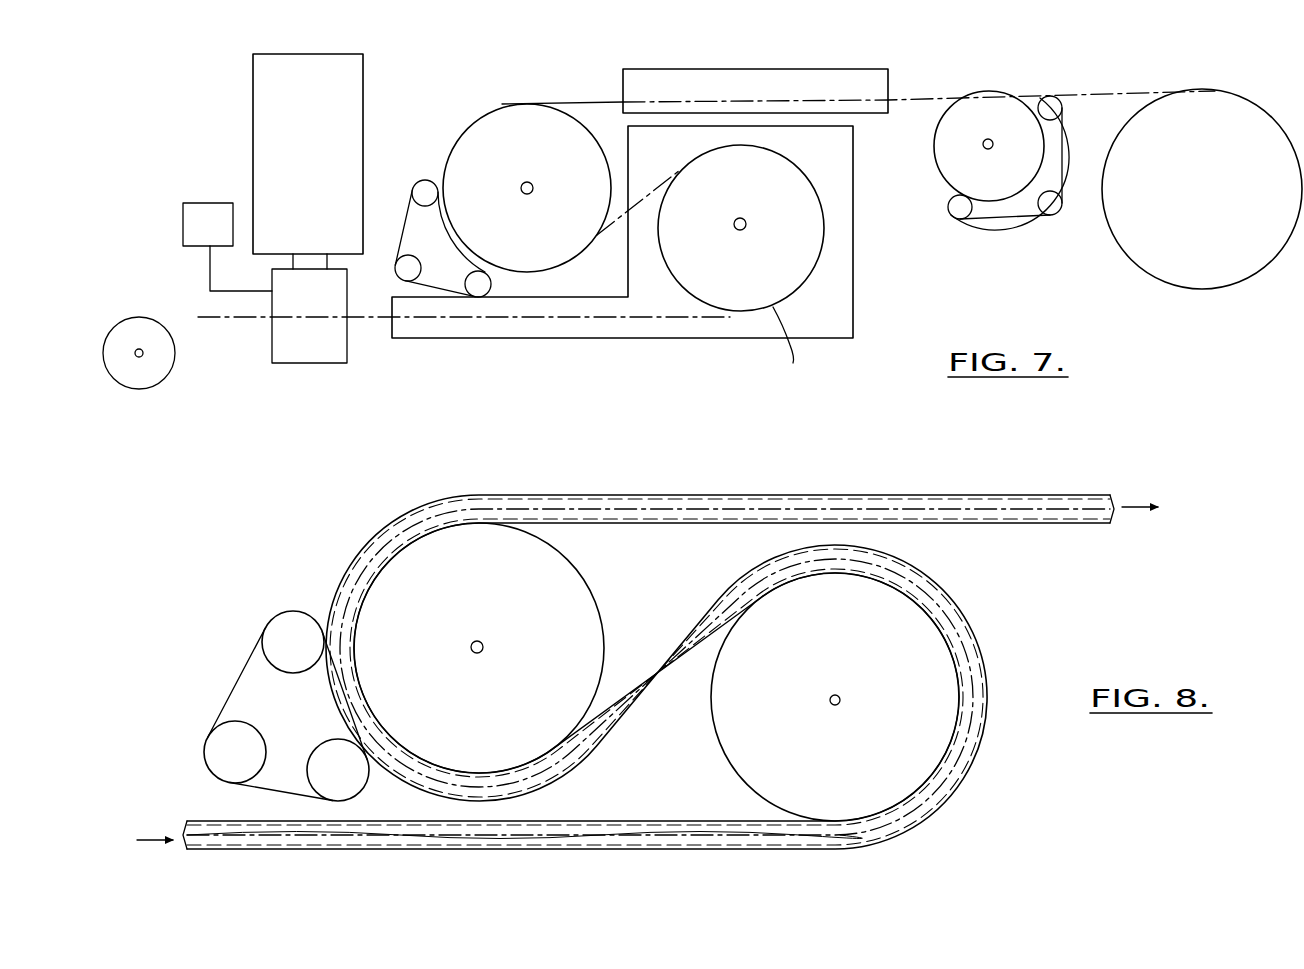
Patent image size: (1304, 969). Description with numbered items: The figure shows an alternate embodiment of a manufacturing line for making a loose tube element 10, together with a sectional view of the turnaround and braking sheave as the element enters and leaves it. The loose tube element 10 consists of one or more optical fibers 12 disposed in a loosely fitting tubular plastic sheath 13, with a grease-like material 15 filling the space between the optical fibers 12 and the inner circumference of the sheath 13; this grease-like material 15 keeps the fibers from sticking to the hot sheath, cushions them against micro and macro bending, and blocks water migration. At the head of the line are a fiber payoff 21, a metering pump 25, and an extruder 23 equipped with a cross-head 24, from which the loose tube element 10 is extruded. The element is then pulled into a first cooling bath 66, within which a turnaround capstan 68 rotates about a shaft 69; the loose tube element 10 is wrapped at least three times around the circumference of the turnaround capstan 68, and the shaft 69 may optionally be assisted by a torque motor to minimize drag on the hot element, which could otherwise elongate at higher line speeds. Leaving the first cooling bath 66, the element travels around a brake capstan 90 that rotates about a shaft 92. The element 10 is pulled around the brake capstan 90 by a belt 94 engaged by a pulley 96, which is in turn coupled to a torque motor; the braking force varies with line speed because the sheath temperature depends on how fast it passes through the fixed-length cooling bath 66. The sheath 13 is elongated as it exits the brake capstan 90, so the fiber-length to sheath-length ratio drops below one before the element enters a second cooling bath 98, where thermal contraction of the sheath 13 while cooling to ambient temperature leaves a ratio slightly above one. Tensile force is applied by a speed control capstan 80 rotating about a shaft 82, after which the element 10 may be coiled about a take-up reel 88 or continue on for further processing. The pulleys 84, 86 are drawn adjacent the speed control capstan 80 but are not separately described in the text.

In FIG. 8, the loose tube element 10 is at (615, 822).
In FIG. 7, the optical fibers 12 is at (162, 297).
In FIG. 8, the optical fibers 12 is at (707, 623).
In FIG. 8, the tubular plastic sheath 13 is at (823, 492).
In FIG. 8, the grease-like material 15 is at (907, 503).
In FIG. 7, the fiber payoff 21 is at (135, 318).
In FIG. 7, the extruder 23 is at (364, 112).
In FIG. 7, the cross-head 24 is at (347, 297).
In FIG. 7, the metering pump 25 is at (213, 203).
In FIG. 7, the first cooling bath 66 is at (550, 338).
In FIG. 7, the turnaround capstan 68 is at (775, 345).
In FIG. 8, the turnaround capstan 68 is at (883, 807).
In FIG. 7, the shaft 69 is at (745, 221).
In FIG. 8, the shaft 69 is at (845, 680).
In FIG. 7, the speed control capstan 80 is at (983, 92).
In FIG. 7, the shaft 82 is at (983, 146).
In FIG. 7, the pulley 84 is at (995, 220).
In FIG. 7, the pulley 86 is at (1053, 217).
In FIG. 7, the take-up reel 88 is at (1213, 90).
In FIG. 7, the brake capstan 90 is at (508, 114).
In FIG. 8, the brake capstan 90 is at (587, 580).
In FIG. 7, the shaft 92 is at (531, 193).
In FIG. 8, the shaft 92 is at (480, 641).
In FIG. 7, the belt 94 is at (403, 232).
In FIG. 8, the belt 94 is at (236, 690).
In FIG. 7, the pulley 96 is at (401, 263).
In FIG. 8, the pulley 96 is at (203, 760).
In FIG. 7, the second cooling bath 98 is at (750, 69).